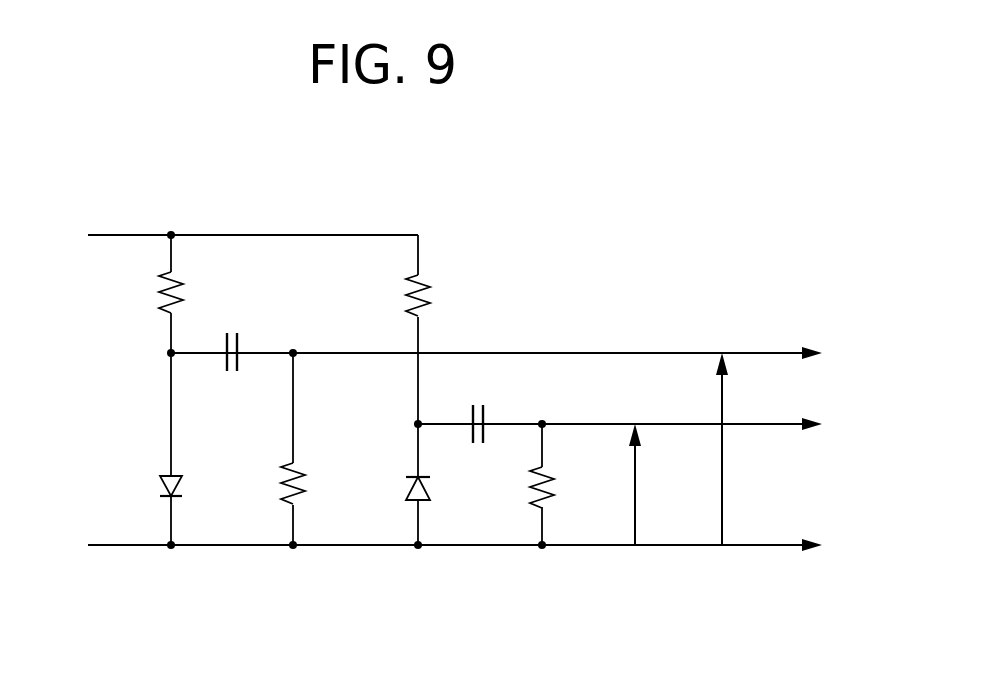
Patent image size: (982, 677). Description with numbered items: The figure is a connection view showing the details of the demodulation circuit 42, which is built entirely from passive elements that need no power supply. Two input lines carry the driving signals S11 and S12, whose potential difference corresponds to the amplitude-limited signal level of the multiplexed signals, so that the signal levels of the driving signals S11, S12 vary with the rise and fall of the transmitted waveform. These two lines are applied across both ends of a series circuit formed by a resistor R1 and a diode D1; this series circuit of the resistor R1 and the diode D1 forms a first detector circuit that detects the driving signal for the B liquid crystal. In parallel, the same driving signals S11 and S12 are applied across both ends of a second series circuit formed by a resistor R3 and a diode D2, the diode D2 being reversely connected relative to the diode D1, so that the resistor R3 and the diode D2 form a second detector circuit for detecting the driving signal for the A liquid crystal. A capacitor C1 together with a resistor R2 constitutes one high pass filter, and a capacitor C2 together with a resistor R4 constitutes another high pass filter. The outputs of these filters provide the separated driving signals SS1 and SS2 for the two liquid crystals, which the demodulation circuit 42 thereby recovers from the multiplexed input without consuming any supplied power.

The demodulation circuit 42 is at (535, 240).
The driving signal S11 is at (128, 235).
The driving signal S12 is at (133, 545).
The resistor R1 is at (188, 292).
The resistor R2 is at (311, 483).
The resistor R3 is at (438, 295).
The resistor R4 is at (559, 488).
The capacitor C1 is at (233, 373).
The capacitor C2 is at (480, 404).
The diode D1 is at (192, 484).
The diode D2 is at (438, 491).
The driving signal SS1 is at (636, 482).
The driving signal SS2 is at (723, 482).